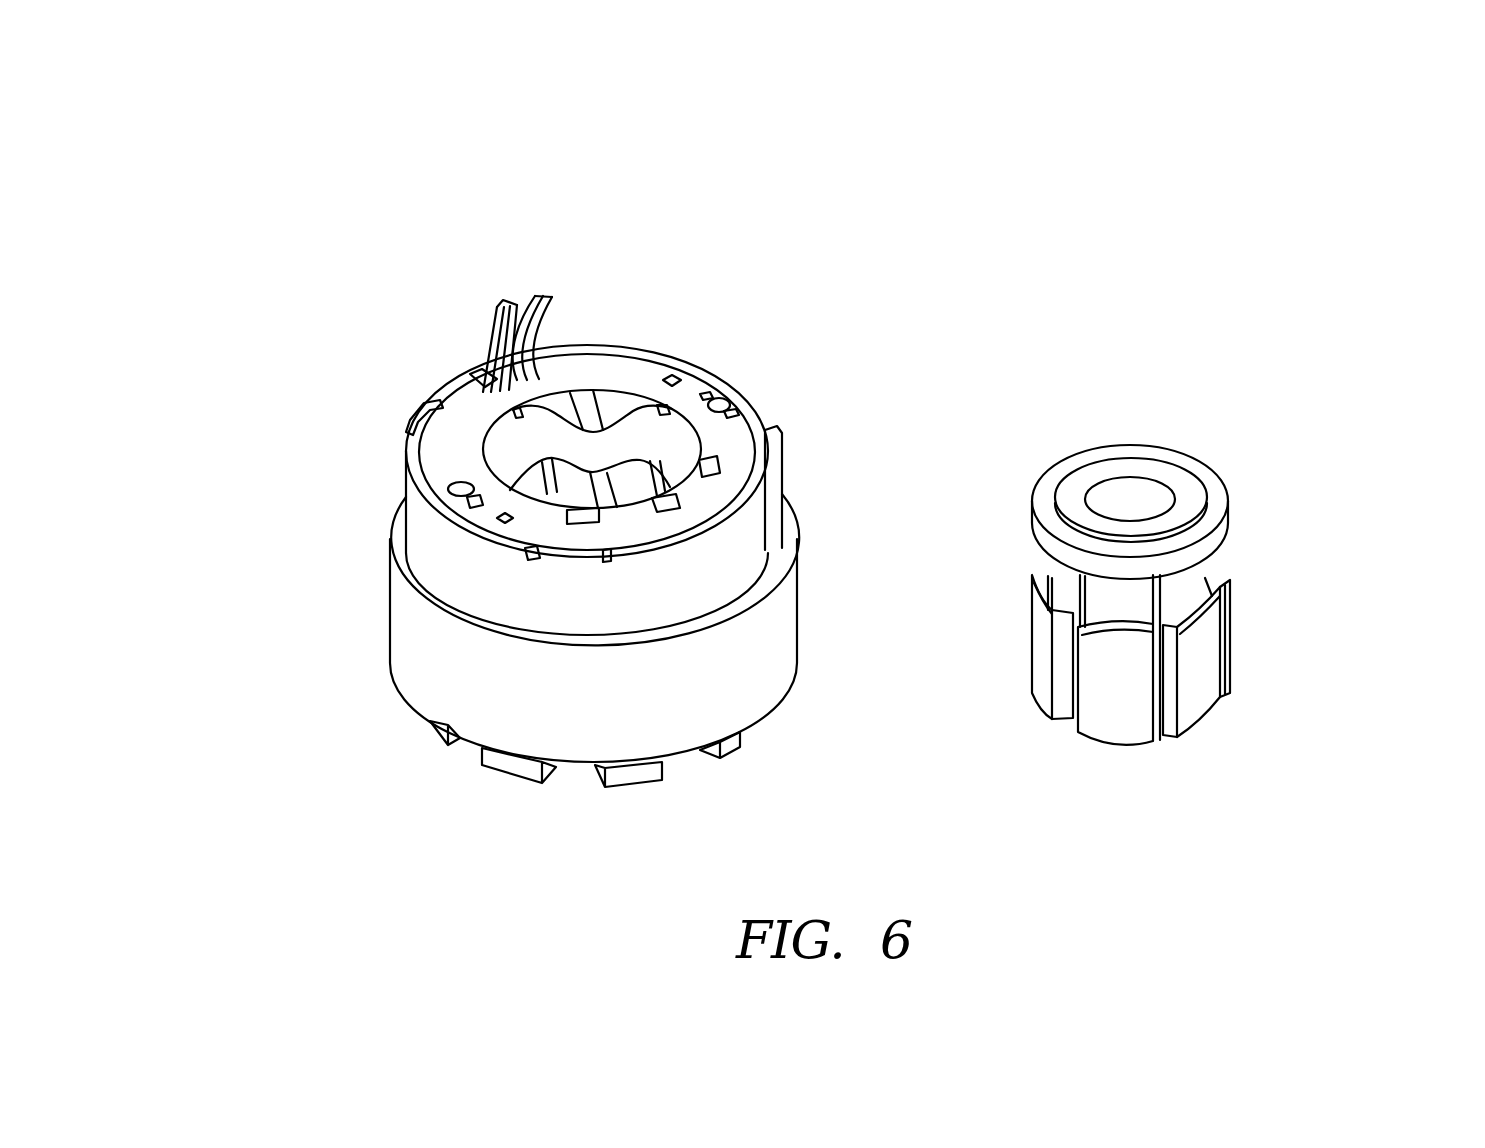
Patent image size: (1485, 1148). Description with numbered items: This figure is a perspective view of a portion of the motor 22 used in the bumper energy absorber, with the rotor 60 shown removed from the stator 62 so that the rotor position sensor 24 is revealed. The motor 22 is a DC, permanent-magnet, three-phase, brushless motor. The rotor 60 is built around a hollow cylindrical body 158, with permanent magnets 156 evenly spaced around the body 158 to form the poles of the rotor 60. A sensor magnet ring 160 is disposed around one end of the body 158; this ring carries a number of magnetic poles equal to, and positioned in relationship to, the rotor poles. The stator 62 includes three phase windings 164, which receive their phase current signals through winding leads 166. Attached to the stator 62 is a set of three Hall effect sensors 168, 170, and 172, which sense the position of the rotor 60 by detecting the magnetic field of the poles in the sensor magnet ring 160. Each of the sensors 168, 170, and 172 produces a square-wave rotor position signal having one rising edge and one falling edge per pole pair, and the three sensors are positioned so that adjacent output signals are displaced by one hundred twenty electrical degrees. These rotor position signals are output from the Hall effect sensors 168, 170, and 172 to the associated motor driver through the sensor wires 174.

The motor 22 is at (930, 212).
The rotor position sensor 24 is at (773, 405).
The rotor 60 is at (1320, 605).
The stator 62 is at (342, 530).
The permanent magnets 156 is at (1113, 732).
The hollow cylindrical body 158 is at (1193, 582).
The sensor magnet ring 160 is at (1165, 455).
The three phase windings 164 is at (582, 407).
The winding leads 166 is at (562, 302).
The Hall effect sensor 168 is at (720, 461).
The Hall effect sensor 170 is at (670, 503).
The Hall effect sensor 172 is at (573, 520).
The sensor wires 174 is at (512, 308).